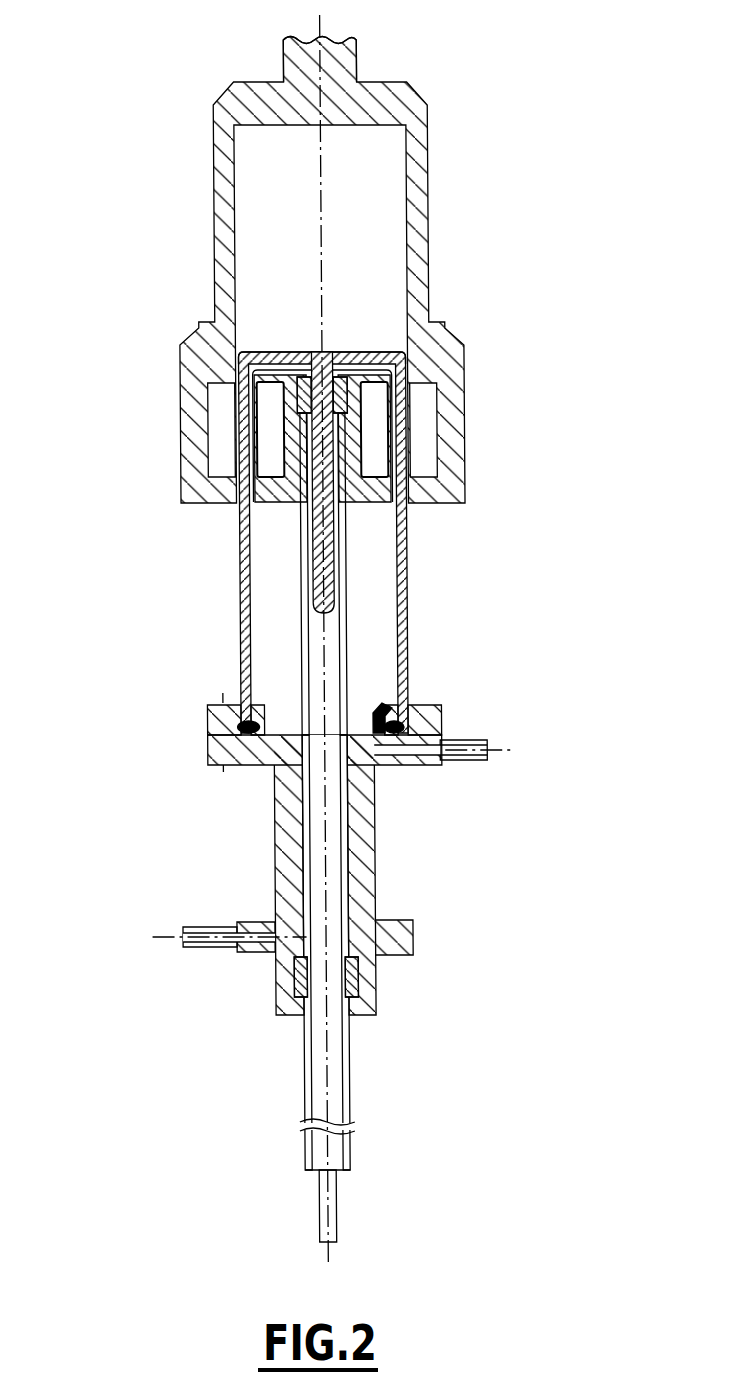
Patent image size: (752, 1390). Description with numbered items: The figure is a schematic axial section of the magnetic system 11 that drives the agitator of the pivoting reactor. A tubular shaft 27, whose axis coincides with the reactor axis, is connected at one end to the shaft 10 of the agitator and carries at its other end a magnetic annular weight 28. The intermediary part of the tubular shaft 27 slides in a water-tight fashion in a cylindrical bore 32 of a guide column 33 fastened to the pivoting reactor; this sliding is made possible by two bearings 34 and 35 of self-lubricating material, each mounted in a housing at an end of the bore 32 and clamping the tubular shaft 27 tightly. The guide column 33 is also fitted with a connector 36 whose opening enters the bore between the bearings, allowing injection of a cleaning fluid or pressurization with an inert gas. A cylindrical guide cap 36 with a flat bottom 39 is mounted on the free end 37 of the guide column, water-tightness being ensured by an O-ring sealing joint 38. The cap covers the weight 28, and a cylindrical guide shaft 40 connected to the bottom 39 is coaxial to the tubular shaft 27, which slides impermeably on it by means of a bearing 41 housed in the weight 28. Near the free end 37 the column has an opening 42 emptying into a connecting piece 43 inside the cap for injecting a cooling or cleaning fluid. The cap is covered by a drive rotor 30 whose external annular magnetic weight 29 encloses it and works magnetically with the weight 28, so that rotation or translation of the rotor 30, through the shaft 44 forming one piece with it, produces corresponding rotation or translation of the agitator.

The shaft of the agitator 10 is at (329, 1203).
The magnetic system 11 is at (146, 535).
The tubular shaft 27 is at (342, 1070).
The magnetic annular weight 28 is at (370, 427).
The magnetic annular weight 29 is at (217, 448).
The drive rotor 30 is at (216, 293).
The cylindrical bore 32 is at (291, 842).
The guide column 33 is at (267, 887).
The bearing 34 is at (270, 980).
The bearing 35 is at (368, 770).
The guide cap 36 is at (242, 640).
The free end of the guide column 37 is at (202, 752).
The O-ring sealing joint 38 is at (202, 722).
The flat bottom 39 is at (364, 353).
The cylindrical guide shaft 40 is at (323, 533).
The bearing 41 is at (289, 397).
The opening 42 is at (428, 763).
The connecting piece 43 is at (367, 703).
The shaft 44 is at (340, 60).